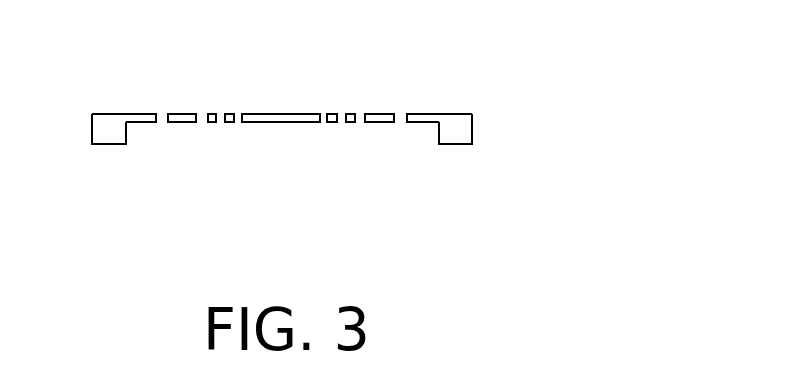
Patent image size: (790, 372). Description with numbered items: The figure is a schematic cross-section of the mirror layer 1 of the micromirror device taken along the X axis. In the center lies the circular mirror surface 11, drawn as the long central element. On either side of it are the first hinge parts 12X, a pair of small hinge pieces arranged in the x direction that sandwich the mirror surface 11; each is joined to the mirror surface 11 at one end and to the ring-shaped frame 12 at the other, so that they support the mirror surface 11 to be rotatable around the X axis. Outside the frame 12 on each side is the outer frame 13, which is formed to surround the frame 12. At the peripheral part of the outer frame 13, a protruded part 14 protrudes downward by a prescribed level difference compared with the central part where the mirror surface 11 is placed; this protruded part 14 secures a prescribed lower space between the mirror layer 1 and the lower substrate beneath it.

The mirror layer 1 is at (221, 70).
The mirror surface 11 is at (280, 113).
The frame 12 is at (183, 113).
The first hinge parts 12X is at (217, 125).
The outer frame 13 is at (107, 117).
The protruded part 14 is at (105, 143).